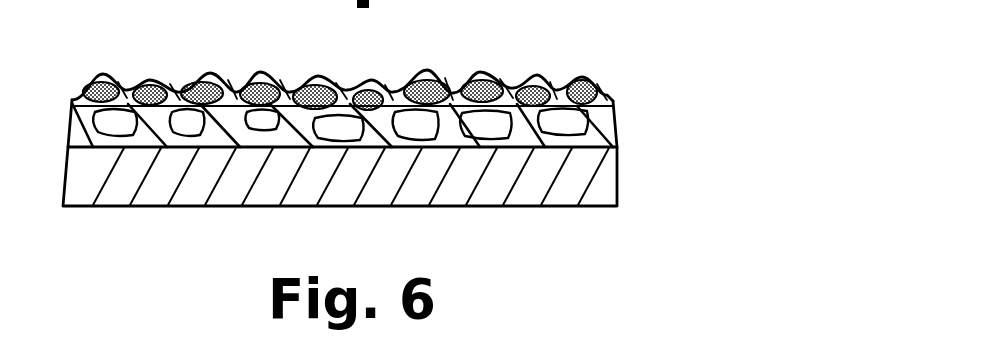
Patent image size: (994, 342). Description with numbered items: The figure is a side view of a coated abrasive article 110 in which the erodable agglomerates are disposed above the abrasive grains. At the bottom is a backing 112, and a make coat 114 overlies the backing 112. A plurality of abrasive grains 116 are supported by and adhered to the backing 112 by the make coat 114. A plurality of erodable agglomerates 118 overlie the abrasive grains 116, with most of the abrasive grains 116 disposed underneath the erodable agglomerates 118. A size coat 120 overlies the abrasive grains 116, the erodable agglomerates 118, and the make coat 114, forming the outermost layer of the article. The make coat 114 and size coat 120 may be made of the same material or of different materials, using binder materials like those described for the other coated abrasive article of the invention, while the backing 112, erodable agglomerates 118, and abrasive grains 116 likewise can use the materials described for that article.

The coated abrasive article 110 is at (568, 222).
The backing 112 is at (580, 175).
The make coat 114 is at (597, 135).
The abrasive grains 116 is at (338, 84).
The erodable agglomerates 118 is at (517, 85).
The size coat 120 is at (600, 88).